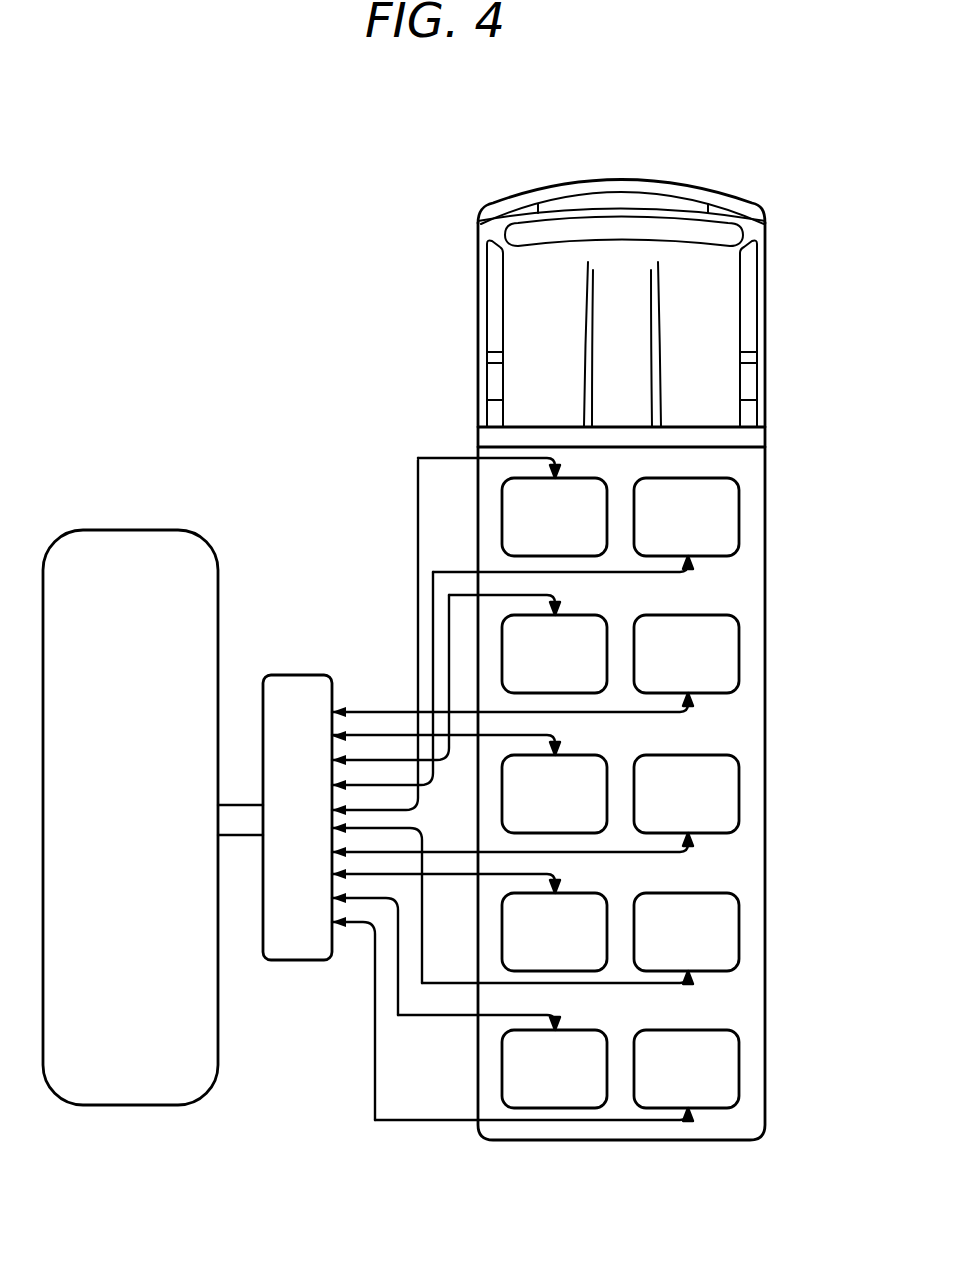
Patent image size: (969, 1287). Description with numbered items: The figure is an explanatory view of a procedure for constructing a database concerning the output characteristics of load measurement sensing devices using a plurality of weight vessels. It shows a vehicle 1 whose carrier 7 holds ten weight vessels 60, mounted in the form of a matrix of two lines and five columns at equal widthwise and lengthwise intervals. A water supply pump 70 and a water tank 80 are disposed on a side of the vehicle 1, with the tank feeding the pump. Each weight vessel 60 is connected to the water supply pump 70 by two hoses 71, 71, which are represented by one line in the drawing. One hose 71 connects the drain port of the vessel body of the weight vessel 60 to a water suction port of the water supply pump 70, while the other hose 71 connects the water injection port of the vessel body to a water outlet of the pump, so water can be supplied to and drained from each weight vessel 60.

The vehicle 1 is at (770, 360).
The carrier 7 is at (750, 876).
The weight vessel 60 is at (503, 538).
The water supply pump 70 is at (284, 962).
The hose 71 is at (418, 472).
The water tank 80 is at (168, 1090).